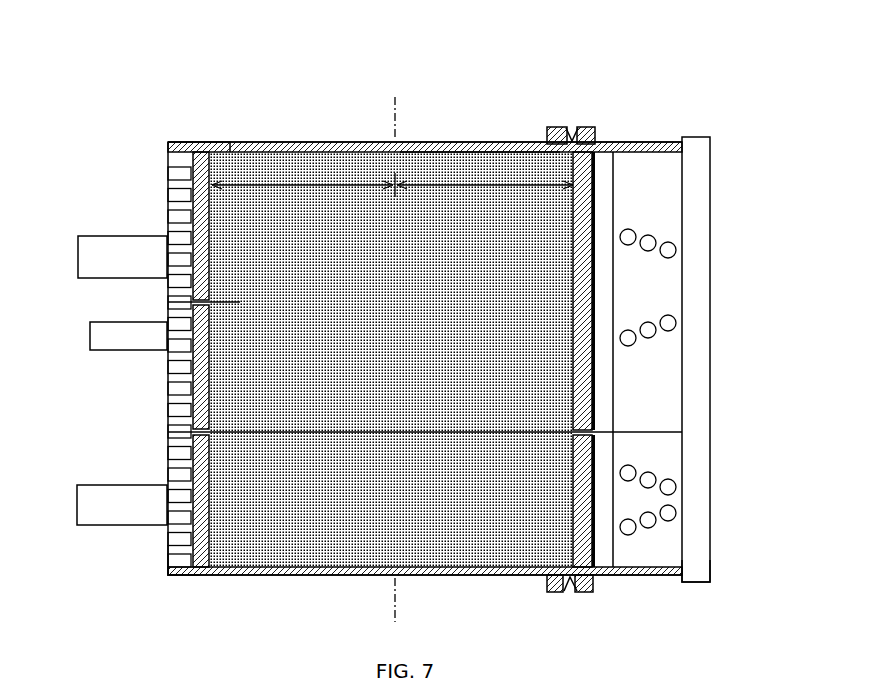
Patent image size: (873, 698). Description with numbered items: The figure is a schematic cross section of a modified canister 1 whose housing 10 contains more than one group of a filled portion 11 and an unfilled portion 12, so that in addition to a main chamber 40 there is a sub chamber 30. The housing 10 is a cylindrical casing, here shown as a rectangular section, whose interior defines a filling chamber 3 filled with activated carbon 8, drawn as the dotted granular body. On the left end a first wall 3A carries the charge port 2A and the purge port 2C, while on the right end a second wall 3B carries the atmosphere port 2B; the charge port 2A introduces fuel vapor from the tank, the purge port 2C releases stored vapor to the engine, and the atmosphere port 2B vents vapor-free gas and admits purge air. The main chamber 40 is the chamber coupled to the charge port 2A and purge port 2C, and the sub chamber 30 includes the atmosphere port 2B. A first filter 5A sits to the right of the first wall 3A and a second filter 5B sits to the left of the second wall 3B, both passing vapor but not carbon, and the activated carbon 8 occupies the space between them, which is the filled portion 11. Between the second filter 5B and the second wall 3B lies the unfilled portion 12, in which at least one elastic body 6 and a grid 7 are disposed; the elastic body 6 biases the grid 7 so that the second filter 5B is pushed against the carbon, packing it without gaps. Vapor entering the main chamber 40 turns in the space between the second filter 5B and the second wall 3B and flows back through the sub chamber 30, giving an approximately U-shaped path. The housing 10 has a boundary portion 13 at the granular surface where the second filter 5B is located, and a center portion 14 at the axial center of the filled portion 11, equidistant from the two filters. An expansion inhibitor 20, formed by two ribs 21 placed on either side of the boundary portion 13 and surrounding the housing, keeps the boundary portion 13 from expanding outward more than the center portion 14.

The canister 1 is at (204, 94).
The filling chamber 3 is at (303, 99).
The first wall 3A is at (165, 558).
The second wall 3B is at (712, 580).
The main chamber 40 is at (215, 141).
The filled portion 11 is at (275, 142).
The housing 10 is at (505, 143).
The sub chamber 30 is at (240, 568).
The first filter 5A is at (200, 198).
The second filter 5B is at (600, 190).
The elastic body 6 is at (655, 333).
The grid 7 is at (605, 375).
The activated carbon 8 is at (303, 405).
The unfilled portion 12 is at (656, 142).
The boundary portion 13 is at (570, 140).
The center portion 14 is at (390, 138).
The expansion inhibitor 20 is at (560, 128).
The ribs 21 is at (547, 140).
The charge port 2A is at (110, 255).
The atmosphere port 2B is at (112, 515).
The purge port 2C is at (125, 338).